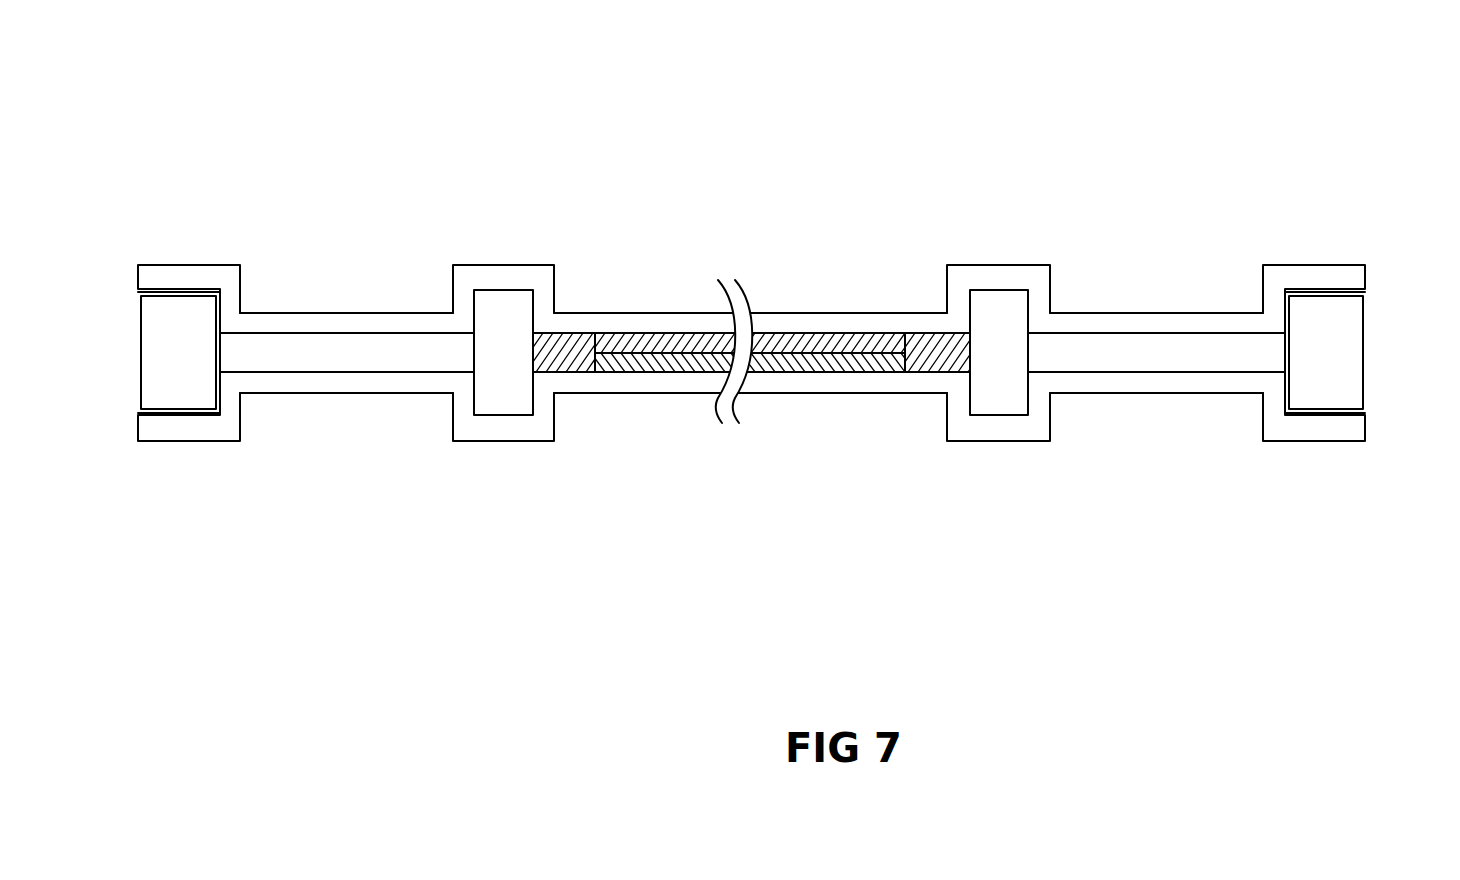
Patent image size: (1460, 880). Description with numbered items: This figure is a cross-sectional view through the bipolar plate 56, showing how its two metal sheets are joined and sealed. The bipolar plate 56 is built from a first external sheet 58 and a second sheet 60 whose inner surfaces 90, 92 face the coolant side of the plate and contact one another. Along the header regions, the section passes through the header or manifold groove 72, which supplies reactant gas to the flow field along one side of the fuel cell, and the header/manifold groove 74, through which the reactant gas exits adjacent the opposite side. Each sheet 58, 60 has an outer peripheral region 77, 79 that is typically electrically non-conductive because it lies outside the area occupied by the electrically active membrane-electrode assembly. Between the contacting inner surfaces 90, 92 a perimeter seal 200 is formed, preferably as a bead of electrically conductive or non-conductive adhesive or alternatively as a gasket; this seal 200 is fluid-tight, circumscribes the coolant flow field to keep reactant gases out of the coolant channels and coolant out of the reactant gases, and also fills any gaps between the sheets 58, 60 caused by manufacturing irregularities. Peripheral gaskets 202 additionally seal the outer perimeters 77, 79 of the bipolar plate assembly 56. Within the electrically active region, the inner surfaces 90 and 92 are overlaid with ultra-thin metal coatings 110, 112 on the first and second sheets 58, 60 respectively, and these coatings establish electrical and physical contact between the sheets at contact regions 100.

The bipolar plate 56 is at (1270, 180).
The external sheet 58 is at (375, 325).
The second sheet 60 is at (372, 380).
The header or manifold groove 72 is at (1010, 330).
The header/manifold groove 74 is at (495, 330).
The outer peripheral region 77 is at (175, 277).
The outer peripheral region 79 is at (165, 425).
The inner surface 90 is at (317, 337).
The inner surface 92 is at (275, 362).
The contact regions 100 is at (866, 354).
The ultra-thin metal coating 110 is at (785, 340).
The ultra-thin metal coating 112 is at (795, 373).
The perimeter seal 200 is at (570, 350).
The peripheral gaskets 202 is at (152, 373).